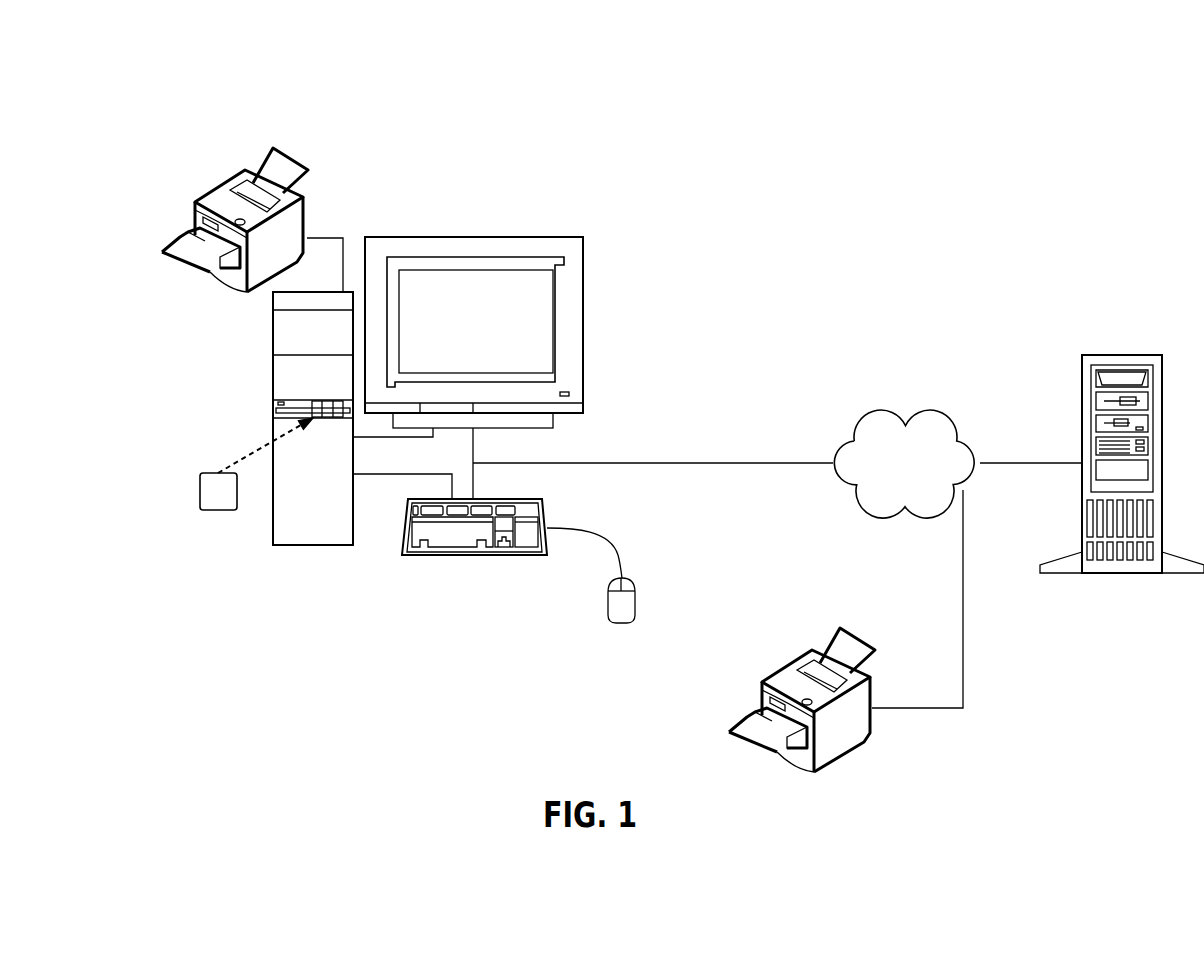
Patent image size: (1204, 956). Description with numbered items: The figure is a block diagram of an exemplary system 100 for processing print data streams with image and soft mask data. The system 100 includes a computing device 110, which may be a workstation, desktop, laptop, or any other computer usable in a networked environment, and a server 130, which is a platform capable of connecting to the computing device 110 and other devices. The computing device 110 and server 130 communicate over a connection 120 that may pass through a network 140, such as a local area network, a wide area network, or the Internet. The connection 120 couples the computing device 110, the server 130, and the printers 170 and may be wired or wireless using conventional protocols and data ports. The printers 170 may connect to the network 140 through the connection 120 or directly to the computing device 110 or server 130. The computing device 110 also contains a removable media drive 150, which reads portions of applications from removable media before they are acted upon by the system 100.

The system 100 is at (325, 65).
The computing device 110 is at (506, 213).
The connection 120 is at (653, 450).
The server 130 is at (1172, 328).
The network 140 is at (925, 474).
The removable media drive 150 is at (256, 479).
The printer 170 is at (156, 243).